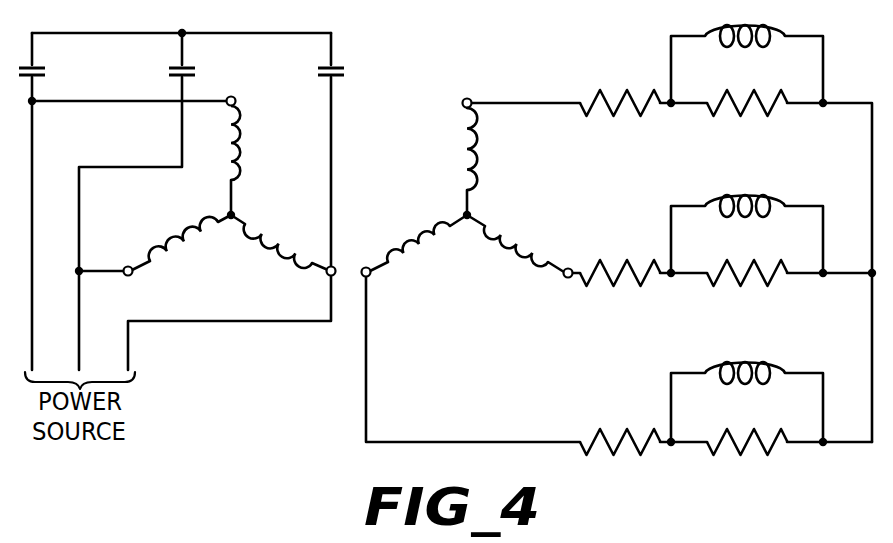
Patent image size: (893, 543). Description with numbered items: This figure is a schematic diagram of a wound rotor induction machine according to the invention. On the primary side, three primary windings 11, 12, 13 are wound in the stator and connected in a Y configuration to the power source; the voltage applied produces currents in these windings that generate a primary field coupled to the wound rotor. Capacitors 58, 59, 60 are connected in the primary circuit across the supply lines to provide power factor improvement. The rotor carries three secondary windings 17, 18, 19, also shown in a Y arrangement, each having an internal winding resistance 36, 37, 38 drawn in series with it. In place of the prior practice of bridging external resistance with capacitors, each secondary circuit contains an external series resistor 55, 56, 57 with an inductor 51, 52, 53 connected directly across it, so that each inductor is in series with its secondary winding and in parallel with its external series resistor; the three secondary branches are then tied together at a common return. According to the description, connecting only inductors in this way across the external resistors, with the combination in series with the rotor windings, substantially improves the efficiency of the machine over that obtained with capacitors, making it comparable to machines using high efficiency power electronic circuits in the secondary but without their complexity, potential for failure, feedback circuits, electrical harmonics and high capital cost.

The primary winding 11 is at (240, 153).
The primary winding 12 is at (174, 233).
The primary winding 13 is at (266, 250).
The rotor winding 17 is at (463, 178).
The rotor winding 18 is at (423, 246).
The rotor winding 19 is at (504, 248).
The internal winding resistance 36 is at (611, 90).
The internal winding resistance 37 is at (611, 260).
The internal winding resistance 38 is at (611, 430).
The inductor 51 is at (742, 47).
The inductor 52 is at (742, 217).
The inductor 53 is at (742, 385).
The external series resistor 55 is at (754, 97).
The external series resistor 56 is at (754, 267).
The external series resistor 57 is at (754, 434).
The capacitor 58 is at (40, 66).
The capacitor 59 is at (192, 66).
The capacitor 60 is at (340, 66).